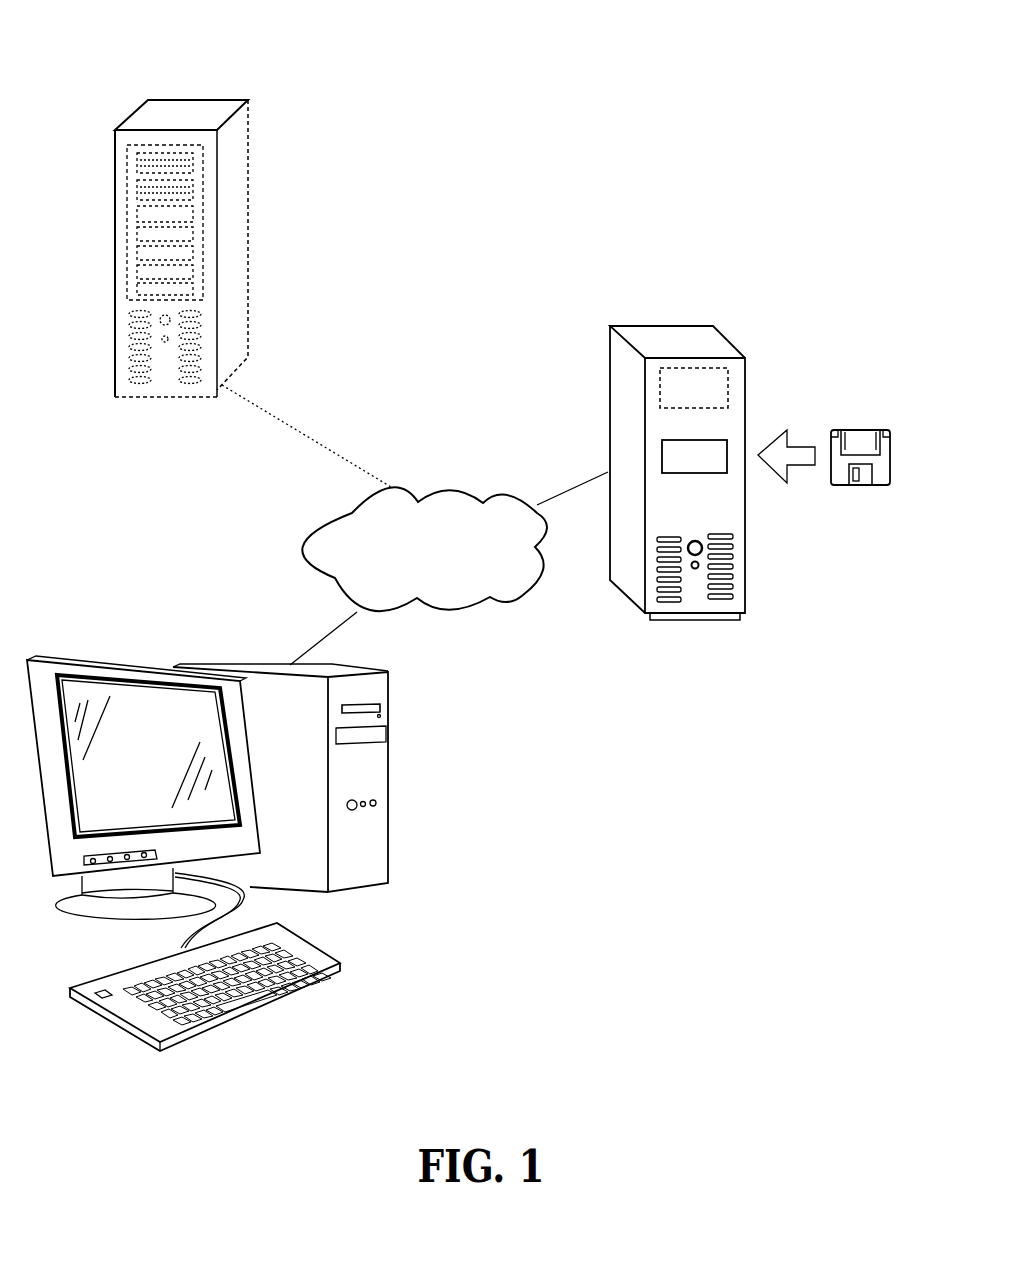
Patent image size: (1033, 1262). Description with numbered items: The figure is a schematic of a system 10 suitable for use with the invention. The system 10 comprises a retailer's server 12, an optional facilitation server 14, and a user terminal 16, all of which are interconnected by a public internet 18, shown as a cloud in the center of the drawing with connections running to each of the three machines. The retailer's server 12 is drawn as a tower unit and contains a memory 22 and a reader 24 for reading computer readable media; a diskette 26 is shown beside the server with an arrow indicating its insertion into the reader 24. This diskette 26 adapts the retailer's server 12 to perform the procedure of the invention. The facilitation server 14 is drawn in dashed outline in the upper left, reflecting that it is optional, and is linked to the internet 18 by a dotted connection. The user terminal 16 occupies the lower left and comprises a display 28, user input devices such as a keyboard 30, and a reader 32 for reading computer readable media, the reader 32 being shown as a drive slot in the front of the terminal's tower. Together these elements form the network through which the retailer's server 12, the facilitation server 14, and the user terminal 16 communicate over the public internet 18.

The system 10 is at (607, 110).
The retailer's server 12 is at (656, 324).
The facilitation server 14 is at (196, 100).
The user terminal 16 is at (95, 625).
The public internet 18 is at (413, 573).
The memory 22 is at (684, 400).
The reader 24 is at (684, 468).
The diskette 26 is at (856, 429).
The display 28 is at (43, 847).
The keyboard 30 is at (240, 1012).
The reader 32 is at (369, 702).